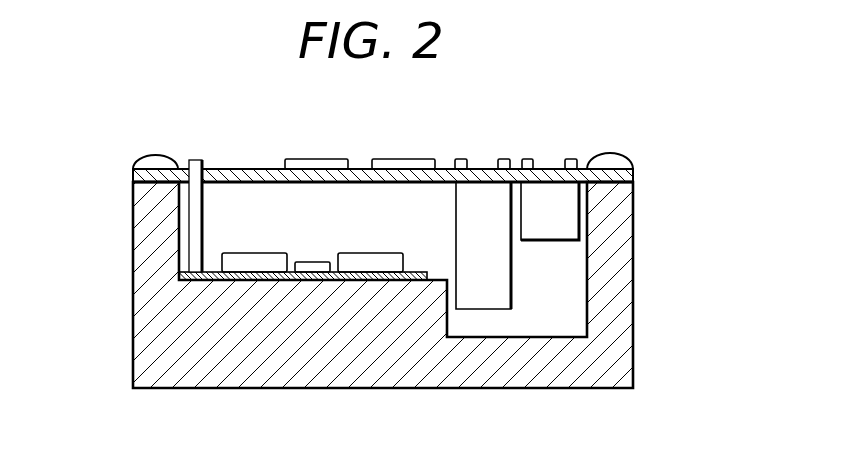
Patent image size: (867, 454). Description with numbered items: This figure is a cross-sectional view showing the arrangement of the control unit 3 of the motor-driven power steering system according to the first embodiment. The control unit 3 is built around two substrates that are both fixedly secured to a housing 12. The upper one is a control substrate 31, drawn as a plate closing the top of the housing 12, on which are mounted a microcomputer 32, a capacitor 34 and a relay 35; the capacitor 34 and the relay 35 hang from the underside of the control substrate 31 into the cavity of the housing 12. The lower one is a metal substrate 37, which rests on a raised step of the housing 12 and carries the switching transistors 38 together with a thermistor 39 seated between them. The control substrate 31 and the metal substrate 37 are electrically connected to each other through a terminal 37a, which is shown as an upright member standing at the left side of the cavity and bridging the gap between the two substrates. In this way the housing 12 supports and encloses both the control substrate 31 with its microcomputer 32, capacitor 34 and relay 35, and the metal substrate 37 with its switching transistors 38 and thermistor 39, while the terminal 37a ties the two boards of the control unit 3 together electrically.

The control unit 3 is at (433, 276).
The housing 12 is at (608, 348).
The control substrate 31 is at (247, 177).
The microcomputer 32 is at (327, 165).
The capacitor 34 is at (484, 215).
The relay 35 is at (558, 205).
The metal substrate 37 is at (180, 273).
The terminal 37a is at (193, 207).
The switching transistors 38 is at (256, 263).
The thermistor 39 is at (312, 266).